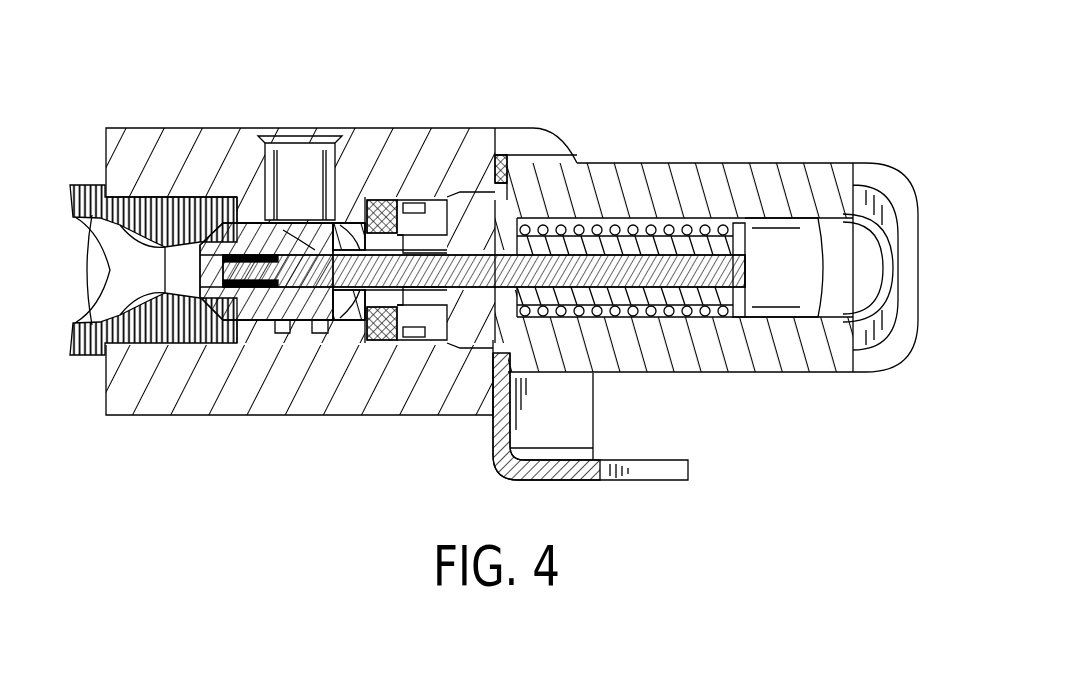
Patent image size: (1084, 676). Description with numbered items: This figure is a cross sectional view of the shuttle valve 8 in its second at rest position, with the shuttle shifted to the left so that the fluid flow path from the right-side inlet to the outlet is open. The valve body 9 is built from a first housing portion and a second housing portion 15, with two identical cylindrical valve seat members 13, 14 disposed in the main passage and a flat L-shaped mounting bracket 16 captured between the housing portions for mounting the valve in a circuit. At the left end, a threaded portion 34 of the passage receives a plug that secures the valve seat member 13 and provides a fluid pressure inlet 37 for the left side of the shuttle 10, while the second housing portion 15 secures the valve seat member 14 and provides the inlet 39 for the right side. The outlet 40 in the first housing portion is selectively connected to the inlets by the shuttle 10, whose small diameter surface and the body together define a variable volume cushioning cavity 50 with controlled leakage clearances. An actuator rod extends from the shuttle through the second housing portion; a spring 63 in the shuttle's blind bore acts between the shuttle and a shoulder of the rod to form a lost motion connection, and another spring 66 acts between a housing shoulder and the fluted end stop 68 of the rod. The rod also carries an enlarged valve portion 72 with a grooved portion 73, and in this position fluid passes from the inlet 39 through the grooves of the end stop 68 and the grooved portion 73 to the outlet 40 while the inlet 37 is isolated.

The shuttle valve 8 is at (90, 456).
The valve body 9 is at (175, 128).
The shuttle 10 is at (283, 232).
The valve seat member 13 is at (215, 197).
The valve seat member 14 is at (385, 200).
The second housing portion 15 is at (733, 362).
The mounting bracket 16 is at (582, 482).
The threaded portion 34 is at (130, 190).
The fluid pressure inlet 37 is at (128, 268).
The inlet 39 is at (862, 237).
The outlet 40 is at (330, 143).
The cushioning cavity 50 is at (256, 223).
The spring 63 is at (225, 345).
The spring 66 is at (648, 225).
The end stop 68 is at (712, 232).
The valve portion 72 is at (400, 345).
The grooved portion 73 is at (470, 348).